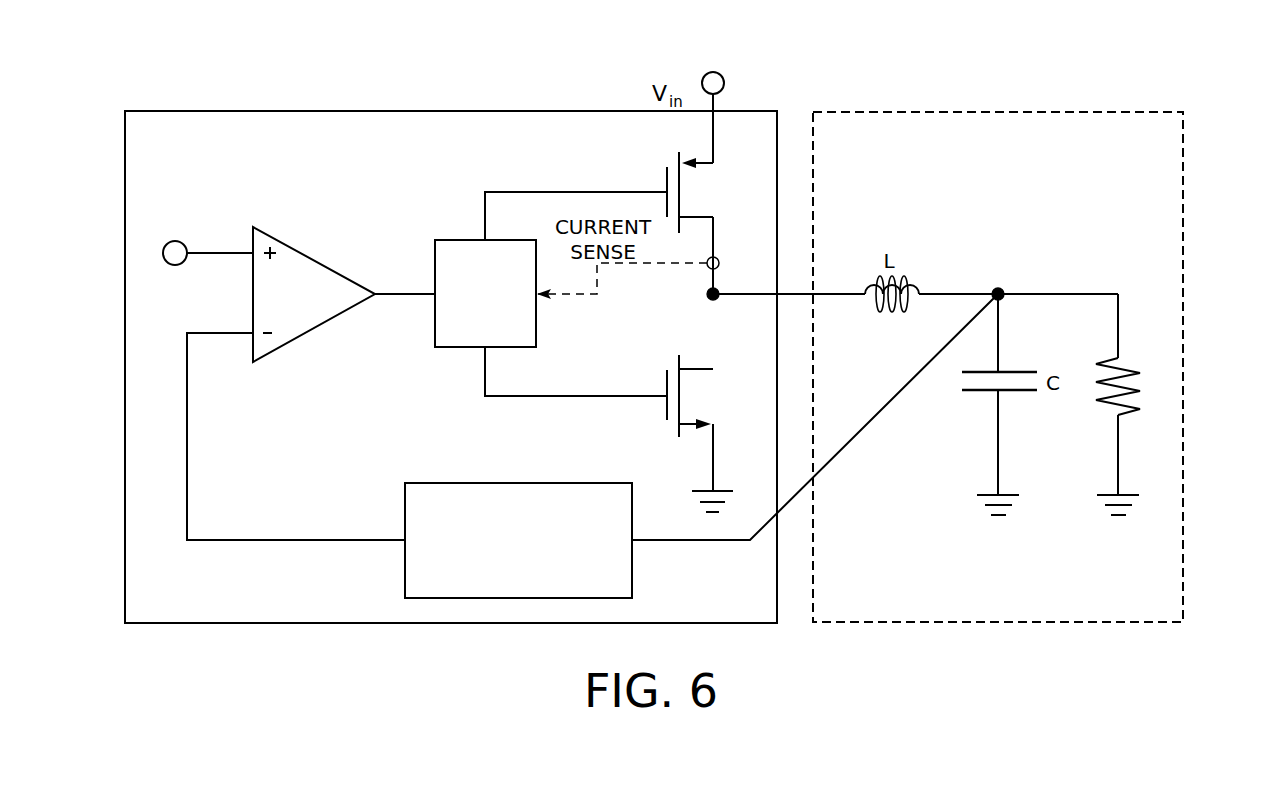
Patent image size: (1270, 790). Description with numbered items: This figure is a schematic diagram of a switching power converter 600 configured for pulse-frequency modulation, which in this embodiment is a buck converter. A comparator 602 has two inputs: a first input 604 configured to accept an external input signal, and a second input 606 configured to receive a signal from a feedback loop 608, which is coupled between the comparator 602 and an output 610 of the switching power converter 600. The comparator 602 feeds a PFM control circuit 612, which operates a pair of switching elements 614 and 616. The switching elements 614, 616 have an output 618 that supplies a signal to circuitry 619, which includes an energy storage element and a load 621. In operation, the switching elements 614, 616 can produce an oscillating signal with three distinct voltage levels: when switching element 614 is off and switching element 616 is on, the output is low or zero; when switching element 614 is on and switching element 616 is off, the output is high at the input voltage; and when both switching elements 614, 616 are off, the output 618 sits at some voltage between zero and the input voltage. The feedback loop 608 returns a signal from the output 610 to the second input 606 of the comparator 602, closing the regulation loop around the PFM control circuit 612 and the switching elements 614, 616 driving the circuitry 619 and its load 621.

The switching power converter 600 is at (1093, 61).
The comparator 602 is at (323, 265).
The first input 604 is at (175, 241).
The second input 606 is at (215, 334).
The feedback loop 608 is at (414, 470).
The output 610 is at (1019, 271).
The PFM control circuit 612 is at (452, 240).
The switching element 614 is at (731, 172).
The switching element 616 is at (649, 419).
The output 618 is at (755, 294).
The circuitry 619 is at (885, 623).
The load 621 is at (1149, 342).